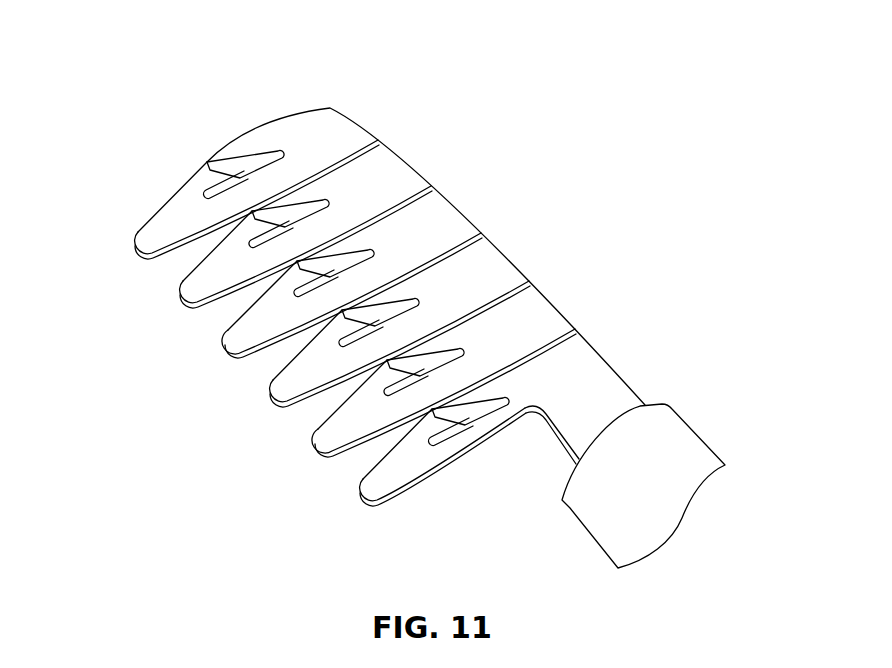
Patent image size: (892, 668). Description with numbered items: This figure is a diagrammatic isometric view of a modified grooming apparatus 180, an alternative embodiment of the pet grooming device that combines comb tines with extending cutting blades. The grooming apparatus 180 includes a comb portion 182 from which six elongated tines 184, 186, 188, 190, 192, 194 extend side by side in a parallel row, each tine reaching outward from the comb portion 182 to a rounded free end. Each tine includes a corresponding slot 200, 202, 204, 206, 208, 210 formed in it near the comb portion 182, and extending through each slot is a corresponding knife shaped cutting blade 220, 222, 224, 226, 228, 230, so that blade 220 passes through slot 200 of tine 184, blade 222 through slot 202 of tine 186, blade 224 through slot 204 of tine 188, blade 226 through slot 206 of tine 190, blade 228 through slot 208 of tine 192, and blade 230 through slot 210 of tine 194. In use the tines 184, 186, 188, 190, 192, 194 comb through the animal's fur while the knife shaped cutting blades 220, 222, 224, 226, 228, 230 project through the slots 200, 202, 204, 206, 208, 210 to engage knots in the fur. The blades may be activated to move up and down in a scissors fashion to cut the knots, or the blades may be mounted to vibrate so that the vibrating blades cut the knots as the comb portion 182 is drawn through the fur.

The grooming apparatus 180 is at (183, 111).
The comb portion 182 is at (430, 243).
The tine 184 is at (372, 489).
The tine 186 is at (327, 440).
The tine 188 is at (282, 390).
The tine 190 is at (237, 341).
The tine 192 is at (192, 291).
The tine 194 is at (147, 242).
The slot 200 is at (495, 399).
The slot 202 is at (450, 350).
The slot 204 is at (405, 300).
The slot 206 is at (360, 251).
The slot 208 is at (315, 201).
The slot 210 is at (270, 152).
The knife shaped cutting blade 220 is at (472, 413).
The knife shaped cutting blade 222 is at (427, 364).
The knife shaped cutting blade 224 is at (382, 314).
The knife shaped cutting blade 226 is at (337, 265).
The knife shaped cutting blade 228 is at (292, 215).
The knife shaped cutting blade 230 is at (247, 166).